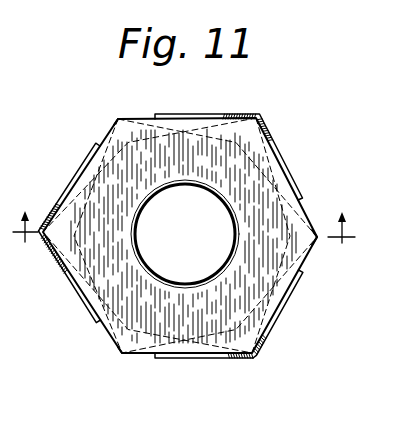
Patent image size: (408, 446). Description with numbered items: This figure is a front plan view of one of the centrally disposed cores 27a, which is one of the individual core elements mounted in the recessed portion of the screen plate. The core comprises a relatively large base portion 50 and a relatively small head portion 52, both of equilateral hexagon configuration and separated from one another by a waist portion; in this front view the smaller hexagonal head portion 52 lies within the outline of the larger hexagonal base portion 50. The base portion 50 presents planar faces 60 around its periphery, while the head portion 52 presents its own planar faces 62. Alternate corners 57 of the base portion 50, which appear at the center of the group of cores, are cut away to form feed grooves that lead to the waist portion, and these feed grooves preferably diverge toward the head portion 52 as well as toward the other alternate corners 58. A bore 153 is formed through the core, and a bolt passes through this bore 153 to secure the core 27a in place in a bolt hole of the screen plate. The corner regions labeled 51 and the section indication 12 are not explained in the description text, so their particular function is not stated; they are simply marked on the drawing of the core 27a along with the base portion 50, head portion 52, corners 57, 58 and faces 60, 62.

The base portion 50 is at (297, 200).
The corner of insert 51 is at (118, 119).
The head portion 52 is at (283, 165).
The alternate corners 57 is at (122, 353).
The other alternate corners 58 is at (257, 117).
The planar faces 60 is at (240, 116).
The planar faces 62 is at (183, 358).
The centrally disposed core 27a is at (80, 300).
The section line 12 is at (182, 241).
The bore 153 is at (204, 284).